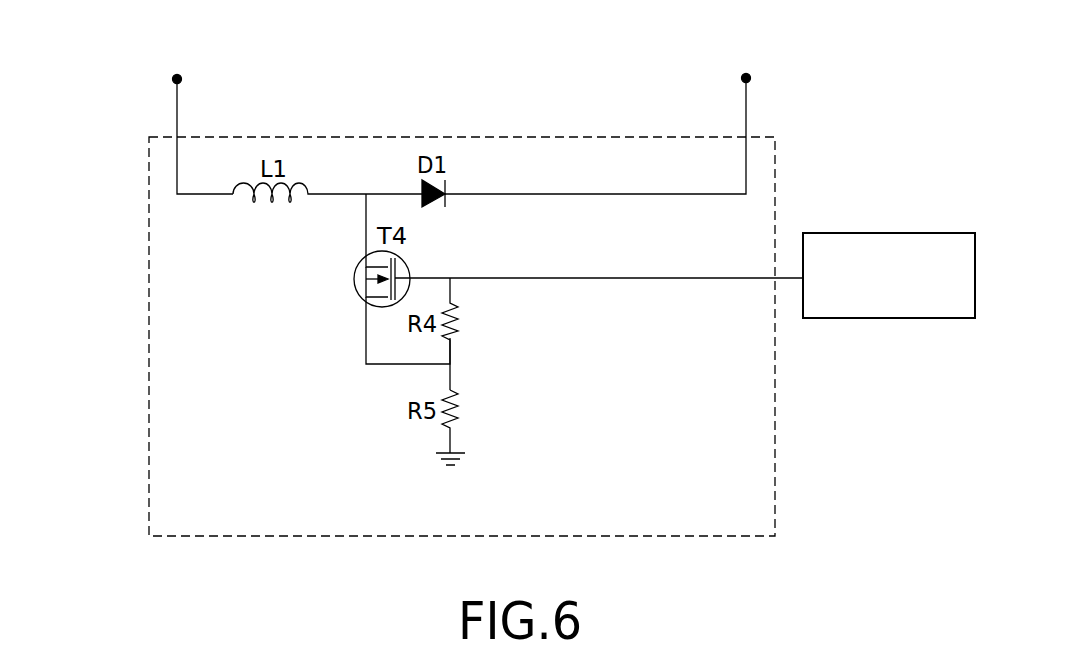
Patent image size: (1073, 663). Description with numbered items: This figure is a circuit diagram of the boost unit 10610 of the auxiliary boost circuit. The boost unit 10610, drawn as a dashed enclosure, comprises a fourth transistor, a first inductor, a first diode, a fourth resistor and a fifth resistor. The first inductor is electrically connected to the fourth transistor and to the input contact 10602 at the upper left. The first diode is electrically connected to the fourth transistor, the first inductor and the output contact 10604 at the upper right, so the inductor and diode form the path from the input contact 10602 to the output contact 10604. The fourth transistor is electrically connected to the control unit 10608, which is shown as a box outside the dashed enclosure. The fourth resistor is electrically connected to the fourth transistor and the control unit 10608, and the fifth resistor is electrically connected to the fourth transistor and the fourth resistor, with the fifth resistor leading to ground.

The input contact 10602 is at (177, 78).
The output contact 10604 is at (746, 78).
The control unit 10608 is at (917, 240).
The boost unit 10610 is at (463, 137).